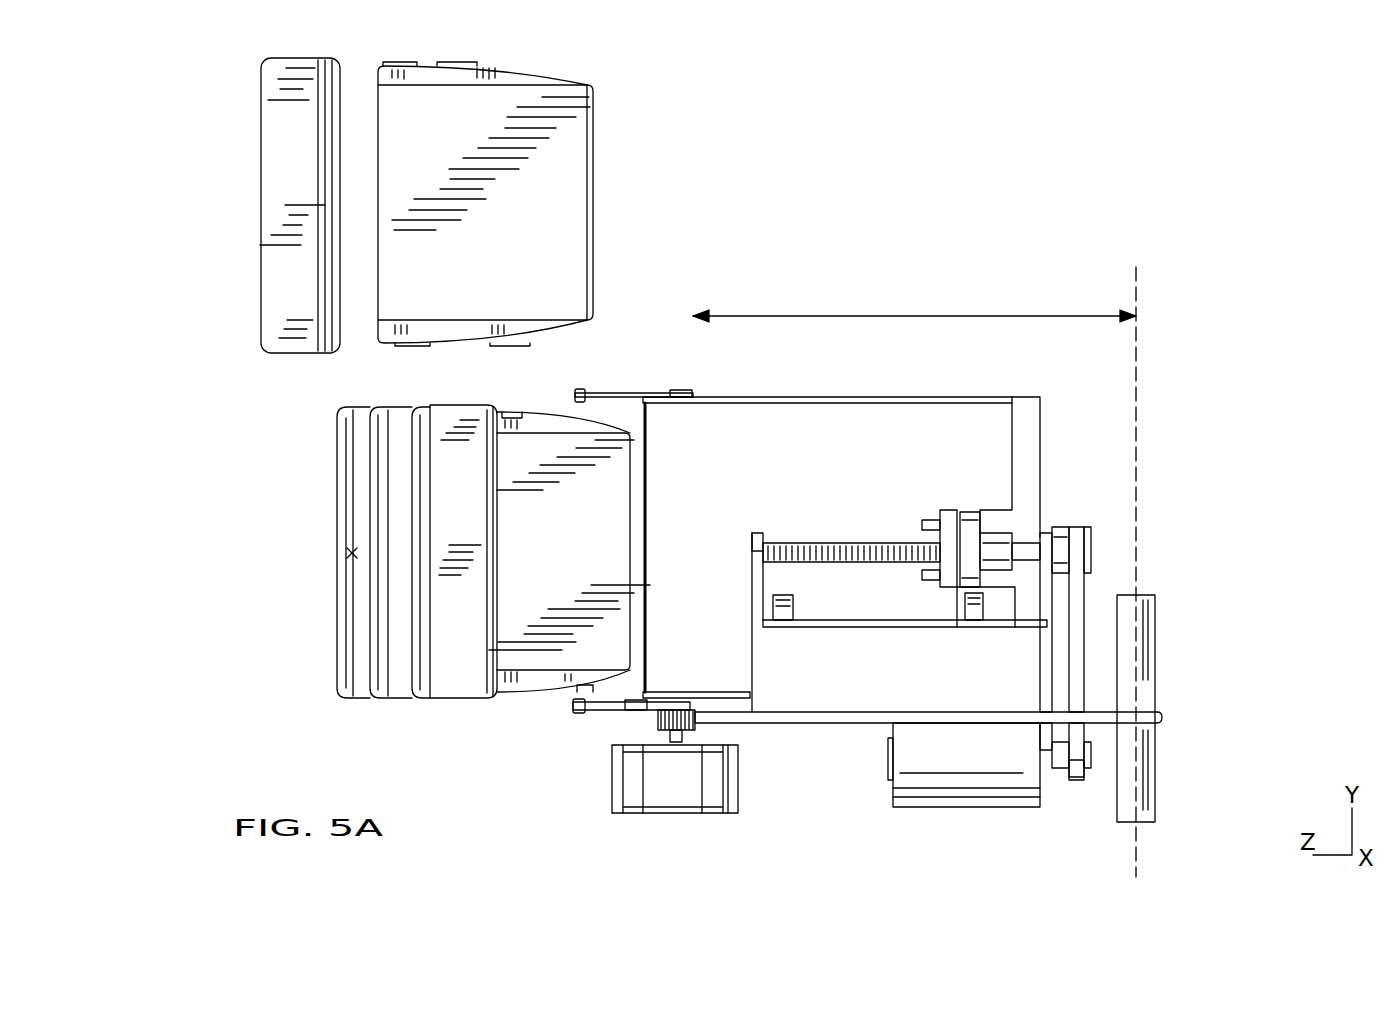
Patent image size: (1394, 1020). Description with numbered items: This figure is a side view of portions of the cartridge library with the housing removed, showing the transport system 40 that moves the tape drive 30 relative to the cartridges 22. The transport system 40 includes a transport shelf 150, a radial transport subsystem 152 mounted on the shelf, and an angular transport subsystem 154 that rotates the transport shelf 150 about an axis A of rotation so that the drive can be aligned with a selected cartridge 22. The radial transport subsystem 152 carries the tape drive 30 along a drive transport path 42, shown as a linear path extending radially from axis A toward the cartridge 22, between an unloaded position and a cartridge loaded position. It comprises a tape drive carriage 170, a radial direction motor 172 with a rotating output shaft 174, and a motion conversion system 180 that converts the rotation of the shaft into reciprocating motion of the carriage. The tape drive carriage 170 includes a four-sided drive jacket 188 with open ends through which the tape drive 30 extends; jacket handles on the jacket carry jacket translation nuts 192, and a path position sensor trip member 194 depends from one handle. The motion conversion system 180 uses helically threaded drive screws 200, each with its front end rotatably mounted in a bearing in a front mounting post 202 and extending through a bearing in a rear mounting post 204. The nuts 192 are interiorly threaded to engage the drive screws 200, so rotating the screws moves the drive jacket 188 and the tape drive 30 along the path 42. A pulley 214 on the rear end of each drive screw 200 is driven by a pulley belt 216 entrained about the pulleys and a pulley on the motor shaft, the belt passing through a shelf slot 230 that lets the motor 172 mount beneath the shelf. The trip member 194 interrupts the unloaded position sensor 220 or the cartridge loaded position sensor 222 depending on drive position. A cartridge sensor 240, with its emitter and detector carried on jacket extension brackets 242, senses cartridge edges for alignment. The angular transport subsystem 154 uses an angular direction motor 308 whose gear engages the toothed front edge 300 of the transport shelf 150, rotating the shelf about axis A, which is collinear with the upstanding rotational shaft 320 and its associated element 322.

The cartridge 22 is at (597, 118).
The tape drive 30 is at (1043, 423).
The transport system 40 is at (1185, 418).
The drive transport path 42 is at (877, 316).
The transport shelf 150 is at (1160, 717).
The radial transport subsystem 152 is at (1152, 383).
The angular transport subsystem 154 is at (588, 770).
The tape drive carriage 170 is at (843, 403).
The radial direction motor 172 is at (950, 807).
The rotating output shaft 174 is at (1076, 777).
The motion conversion system 180 is at (1212, 530).
The drive jacket 188 is at (735, 463).
The jacket translation nut 192 is at (946, 510).
The path position sensor trip member 194 is at (960, 605).
The drive screw 200 is at (840, 545).
The front mounting post 202 is at (757, 533).
The rear mounting post 204 is at (1048, 528).
The pulley 214 is at (1090, 527).
The pulley belt 216 is at (1234, 565).
The unloaded position sensor 220 is at (973, 613).
The cartridge loaded position sensor 222 is at (783, 620).
The shelf slot 230 is at (1097, 722).
The cartridge sensor 240 is at (600, 391).
The jacket extension bracket 242 is at (672, 392).
The toothed front edge 300 is at (710, 712).
The angular direction motor 308 is at (650, 813).
The rotational shaft 320 is at (1147, 780).
The plate edge 322 is at (1160, 703).
The axis of rotation A is at (1137, 638).